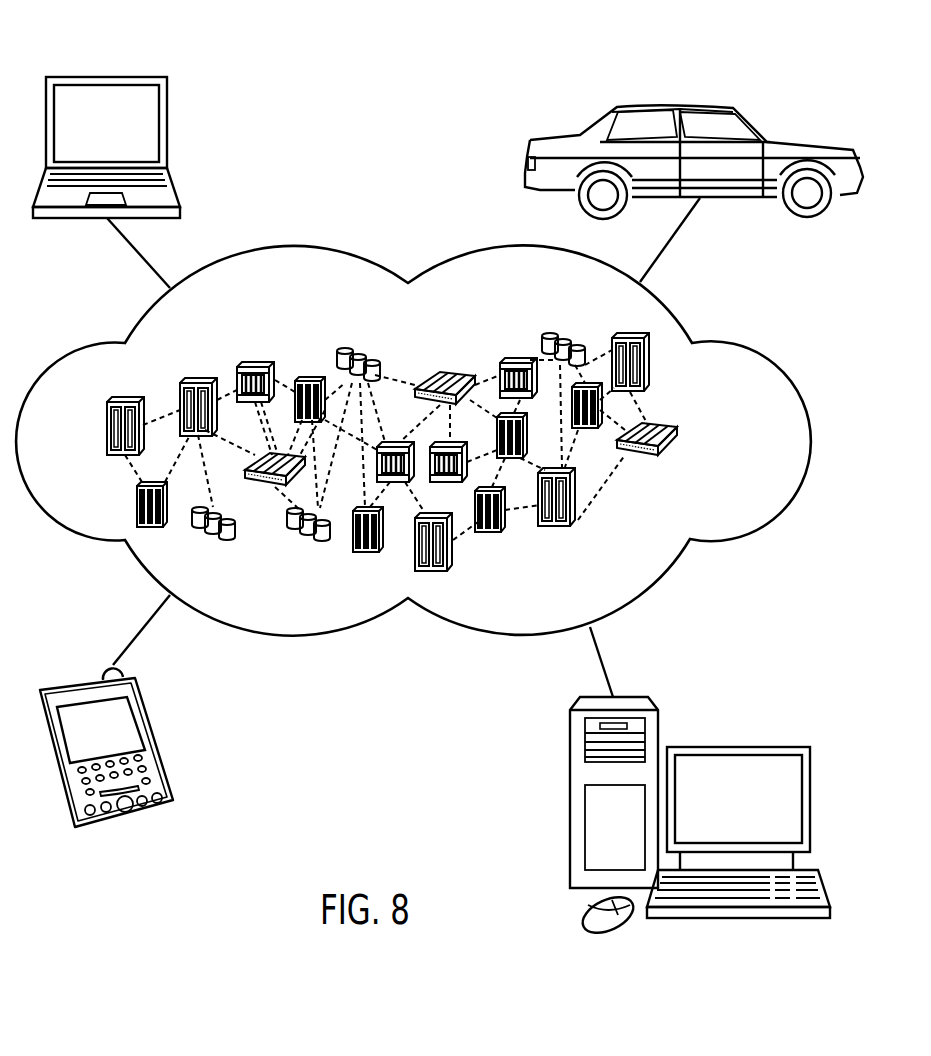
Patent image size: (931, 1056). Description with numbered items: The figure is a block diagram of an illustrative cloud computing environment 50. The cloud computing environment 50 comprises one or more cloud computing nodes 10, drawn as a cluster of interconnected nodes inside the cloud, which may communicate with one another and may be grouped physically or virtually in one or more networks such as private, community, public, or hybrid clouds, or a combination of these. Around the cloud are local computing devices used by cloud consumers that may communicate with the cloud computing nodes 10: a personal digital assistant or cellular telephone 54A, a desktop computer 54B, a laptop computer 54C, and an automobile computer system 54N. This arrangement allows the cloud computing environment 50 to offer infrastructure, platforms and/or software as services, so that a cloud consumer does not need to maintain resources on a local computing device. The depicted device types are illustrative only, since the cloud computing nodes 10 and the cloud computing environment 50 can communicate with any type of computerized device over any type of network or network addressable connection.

The cloud computing node 10 is at (697, 442).
The cloud computing environment 50 is at (752, 345).
The personal digital assistant or cellular telephone 54A is at (85, 680).
The desktop computer 54B is at (737, 746).
The laptop computer 54C is at (106, 76).
The automobile computer system 54N is at (673, 103).